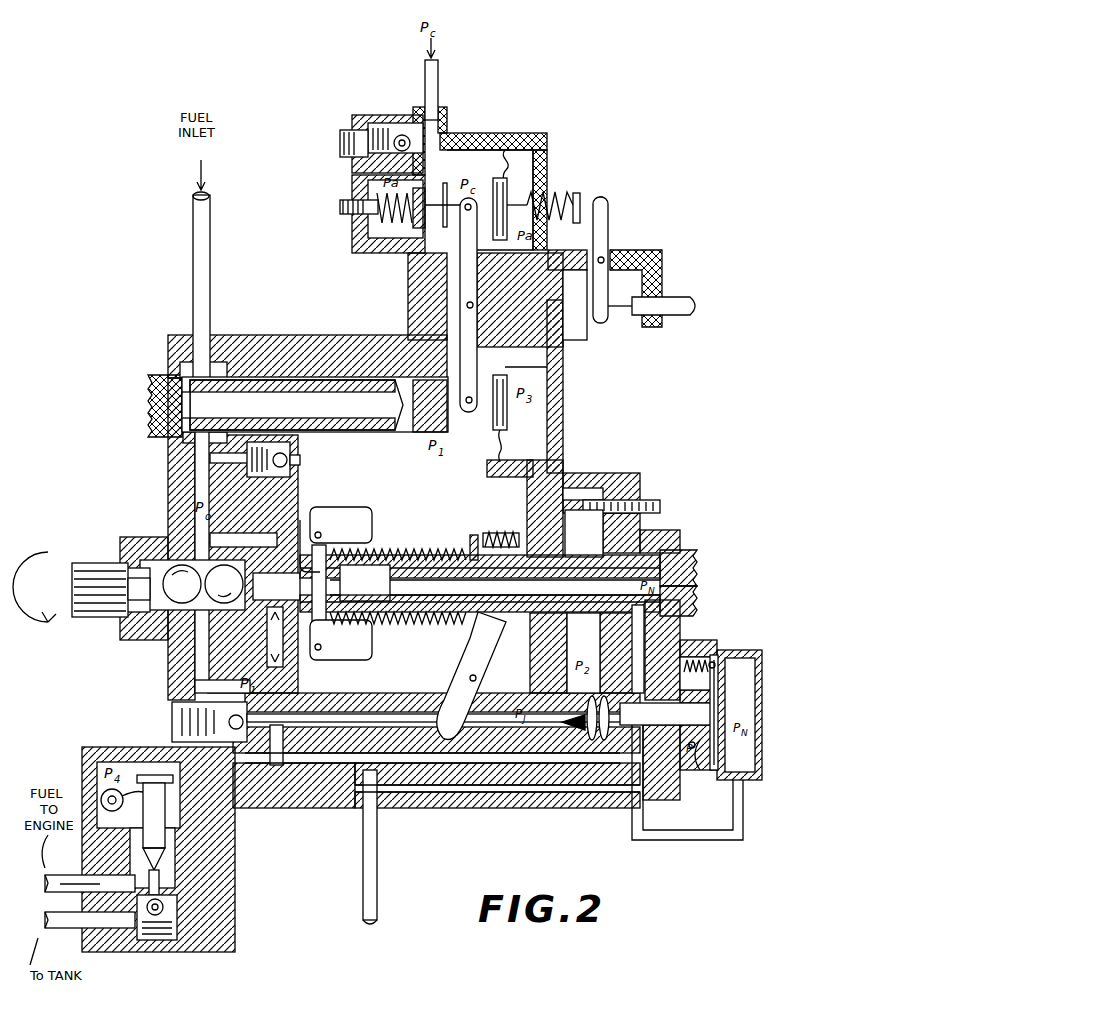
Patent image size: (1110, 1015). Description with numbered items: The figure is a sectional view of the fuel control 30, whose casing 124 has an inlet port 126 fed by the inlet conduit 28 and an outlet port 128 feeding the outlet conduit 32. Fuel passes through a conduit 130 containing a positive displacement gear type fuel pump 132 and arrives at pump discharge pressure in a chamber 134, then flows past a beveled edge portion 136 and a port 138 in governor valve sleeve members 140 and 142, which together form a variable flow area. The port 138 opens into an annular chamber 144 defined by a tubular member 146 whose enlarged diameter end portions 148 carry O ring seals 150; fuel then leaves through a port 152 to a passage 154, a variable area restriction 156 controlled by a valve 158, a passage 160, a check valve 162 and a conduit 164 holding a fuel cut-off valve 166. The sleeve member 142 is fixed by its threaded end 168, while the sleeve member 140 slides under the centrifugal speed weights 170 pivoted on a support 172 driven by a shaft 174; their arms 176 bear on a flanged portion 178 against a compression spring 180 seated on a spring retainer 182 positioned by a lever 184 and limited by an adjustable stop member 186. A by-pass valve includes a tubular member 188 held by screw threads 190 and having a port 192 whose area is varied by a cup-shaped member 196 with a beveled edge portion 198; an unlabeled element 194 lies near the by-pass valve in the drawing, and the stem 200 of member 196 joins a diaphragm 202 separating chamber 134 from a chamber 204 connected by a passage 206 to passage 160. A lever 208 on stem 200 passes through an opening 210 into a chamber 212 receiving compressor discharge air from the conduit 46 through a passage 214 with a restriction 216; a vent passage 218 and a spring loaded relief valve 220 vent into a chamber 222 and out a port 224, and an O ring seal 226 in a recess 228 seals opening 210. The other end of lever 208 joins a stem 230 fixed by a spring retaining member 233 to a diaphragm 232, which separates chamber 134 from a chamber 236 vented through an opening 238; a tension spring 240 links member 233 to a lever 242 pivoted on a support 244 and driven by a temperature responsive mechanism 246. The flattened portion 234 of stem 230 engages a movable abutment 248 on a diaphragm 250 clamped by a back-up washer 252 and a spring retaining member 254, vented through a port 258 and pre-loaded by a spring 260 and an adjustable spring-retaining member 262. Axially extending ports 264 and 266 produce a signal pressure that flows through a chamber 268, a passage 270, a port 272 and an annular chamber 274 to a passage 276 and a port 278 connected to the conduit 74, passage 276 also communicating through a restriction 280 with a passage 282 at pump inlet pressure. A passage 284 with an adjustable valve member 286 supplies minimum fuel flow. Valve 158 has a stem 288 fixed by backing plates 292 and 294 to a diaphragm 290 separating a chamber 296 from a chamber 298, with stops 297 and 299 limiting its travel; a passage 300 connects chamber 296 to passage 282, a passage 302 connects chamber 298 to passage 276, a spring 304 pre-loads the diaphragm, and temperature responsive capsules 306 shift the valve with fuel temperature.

The inlet conduit 28 is at (200, 252).
The fuel control 30 is at (127, 378).
The outlet conduit 32 is at (62, 875).
The conduit 46 is at (438, 75).
The conduit 74 is at (368, 853).
The casing 124 is at (565, 398).
The inlet port 126 is at (228, 345).
The outlet port 128 is at (82, 902).
The conduit 130 is at (170, 478).
The positive displacement gear type fuel pump 132 is at (170, 530).
The chamber 134 is at (405, 696).
The beveled edge portion 136 is at (428, 548).
The port 138 is at (440, 550).
The governor valve sleeve member 140 is at (420, 545).
The governor valve sleeve member 142 is at (466, 540).
The annular chamber 144 is at (410, 630).
The tubular member 146 is at (440, 630).
The enlarged diameter end portions 148 is at (385, 628).
The O ring seals 150 is at (420, 640).
The port 152 is at (583, 653).
The passage 154 is at (600, 657).
The variable area restriction 156 is at (575, 708).
The valve 158 is at (575, 728).
The passage 160 is at (510, 700).
The check valve 162 is at (243, 718).
The conduit 164 is at (168, 830).
The fuel cut-off valve 166 is at (160, 856).
The threaded end 168 is at (697, 560).
The centrifugal speed weights 170 is at (352, 533).
The support 172 is at (308, 518).
The shaft 174 is at (290, 597).
The arms 176 is at (311, 589).
The flanged portion 178 is at (318, 518).
The compression spring 180 is at (362, 540).
The spring retainer 182 is at (460, 650).
The lever 184 is at (505, 645).
The adjustable stop member 186 is at (500, 533).
The tubular member 188 is at (335, 378).
The screw threads 190 is at (160, 360).
The port 192 is at (355, 410).
The valve land 194 is at (205, 420).
The cup-shaped member 196 is at (405, 370).
The beveled edge portion 198 is at (375, 432).
The stem 200 is at (483, 412).
The diaphragm 202 is at (547, 362).
The chamber 204 is at (542, 426).
The passage 206 is at (540, 475).
The lever 208 is at (428, 378).
The opening 210 is at (466, 305).
The chamber 212 is at (490, 169).
The passage 214 is at (455, 140).
The restriction 216 is at (447, 112).
The vent passage 218 is at (403, 135).
The spring loaded relief valve 220 is at (392, 125).
The chamber 222 is at (360, 118).
The port 224 is at (342, 146).
The O ring seal 226 is at (576, 305).
The recess 228 is at (447, 325).
The stem 230 is at (497, 240).
The diaphragm 232 is at (515, 160).
The spring retaining member 233 is at (545, 195).
The flattened portion 234 is at (455, 235).
The chamber 236 is at (540, 175).
The opening 238 is at (548, 238).
The tension spring 240 is at (605, 200).
The lever 242 is at (608, 215).
The support 244 is at (608, 240).
The mechanism 246 is at (685, 300).
The movable abutment 248 is at (440, 180).
The diaphragm 250 is at (355, 175).
The back-up washer 252 is at (440, 210).
The spring retaining member 254 is at (408, 250).
The port 258 is at (372, 253).
The spring 260 is at (353, 255).
The adjustable spring-retaining member 262 is at (355, 225).
The axially extending port 264 is at (400, 548).
The axially extending port 266 is at (380, 603).
The chamber 268 is at (380, 585).
The passage 270 is at (568, 580).
The port 272 is at (697, 590).
The annular chamber 274 is at (650, 530).
The passage 276 is at (640, 638).
The port 278 is at (350, 787).
The restriction 280 is at (328, 782).
The passage 282 is at (283, 650).
The passage 284 is at (580, 490).
The adjustable valve member 286 is at (660, 503).
The stem 288 is at (672, 723).
The diaphragm 290 is at (730, 668).
The backing plate 292 is at (722, 690).
The backing plate 294 is at (705, 770).
The chamber 296 is at (700, 660).
The stop 297 is at (688, 755).
The chamber 298 is at (745, 752).
The stop 299 is at (745, 702).
The passage 300 is at (478, 783).
The passage 302 is at (720, 832).
The spring 304 is at (714, 660).
The temperature responsive capsules 306 is at (598, 770).